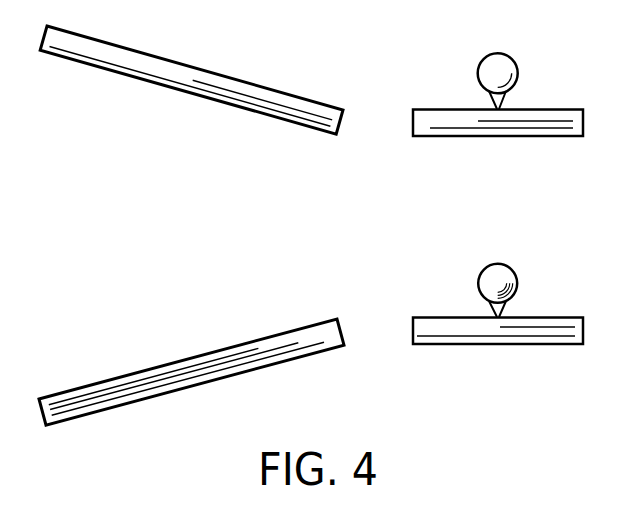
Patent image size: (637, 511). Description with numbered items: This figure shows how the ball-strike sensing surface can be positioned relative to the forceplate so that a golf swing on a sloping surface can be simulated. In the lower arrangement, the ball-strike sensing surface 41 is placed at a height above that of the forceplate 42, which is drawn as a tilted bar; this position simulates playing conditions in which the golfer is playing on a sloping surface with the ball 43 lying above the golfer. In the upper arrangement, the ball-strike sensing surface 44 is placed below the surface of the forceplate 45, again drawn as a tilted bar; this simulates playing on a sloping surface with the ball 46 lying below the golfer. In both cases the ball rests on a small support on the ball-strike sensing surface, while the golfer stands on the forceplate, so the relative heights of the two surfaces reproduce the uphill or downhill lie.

The ball-strike sensing surface 41 is at (559, 317).
The forceplate 42 is at (202, 356).
The ball 43 is at (501, 264).
The ball-strike sensing surface 44 is at (560, 108).
The forceplate 45 is at (158, 56).
The ball 46 is at (503, 53).